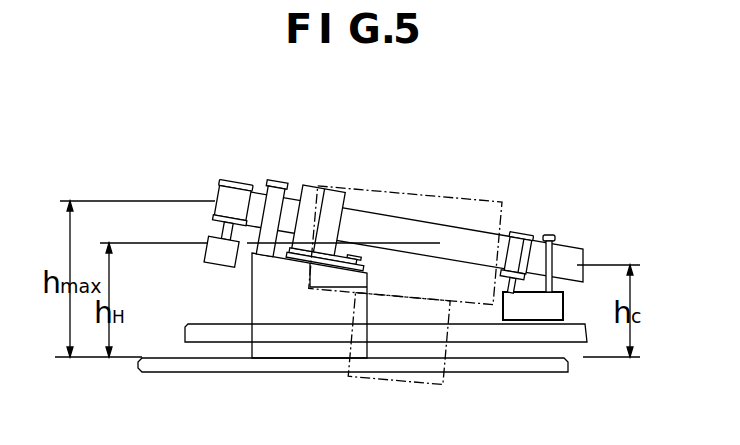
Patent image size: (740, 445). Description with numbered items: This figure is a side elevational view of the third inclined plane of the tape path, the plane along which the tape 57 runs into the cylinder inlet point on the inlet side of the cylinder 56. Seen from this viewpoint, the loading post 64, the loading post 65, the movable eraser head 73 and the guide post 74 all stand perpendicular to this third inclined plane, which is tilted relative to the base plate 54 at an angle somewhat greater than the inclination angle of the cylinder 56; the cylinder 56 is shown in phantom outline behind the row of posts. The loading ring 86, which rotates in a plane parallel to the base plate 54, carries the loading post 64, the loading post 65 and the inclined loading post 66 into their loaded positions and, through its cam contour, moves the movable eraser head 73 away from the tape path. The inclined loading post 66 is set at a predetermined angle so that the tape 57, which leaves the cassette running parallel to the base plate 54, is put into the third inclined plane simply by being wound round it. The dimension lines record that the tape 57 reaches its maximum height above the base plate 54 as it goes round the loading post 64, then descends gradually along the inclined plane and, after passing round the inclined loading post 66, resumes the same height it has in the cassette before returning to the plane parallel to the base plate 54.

The base plate 54 is at (515, 366).
The cylinder 56 is at (447, 199).
The tape 57 is at (585, 251).
The loading post 64 is at (236, 181).
The loading post 65 is at (522, 236).
The inclined loading post 66 is at (556, 238).
The movable eraser head 73 is at (326, 192).
The fixed first guide post 74 is at (278, 182).
The loading ring 86 is at (578, 342).